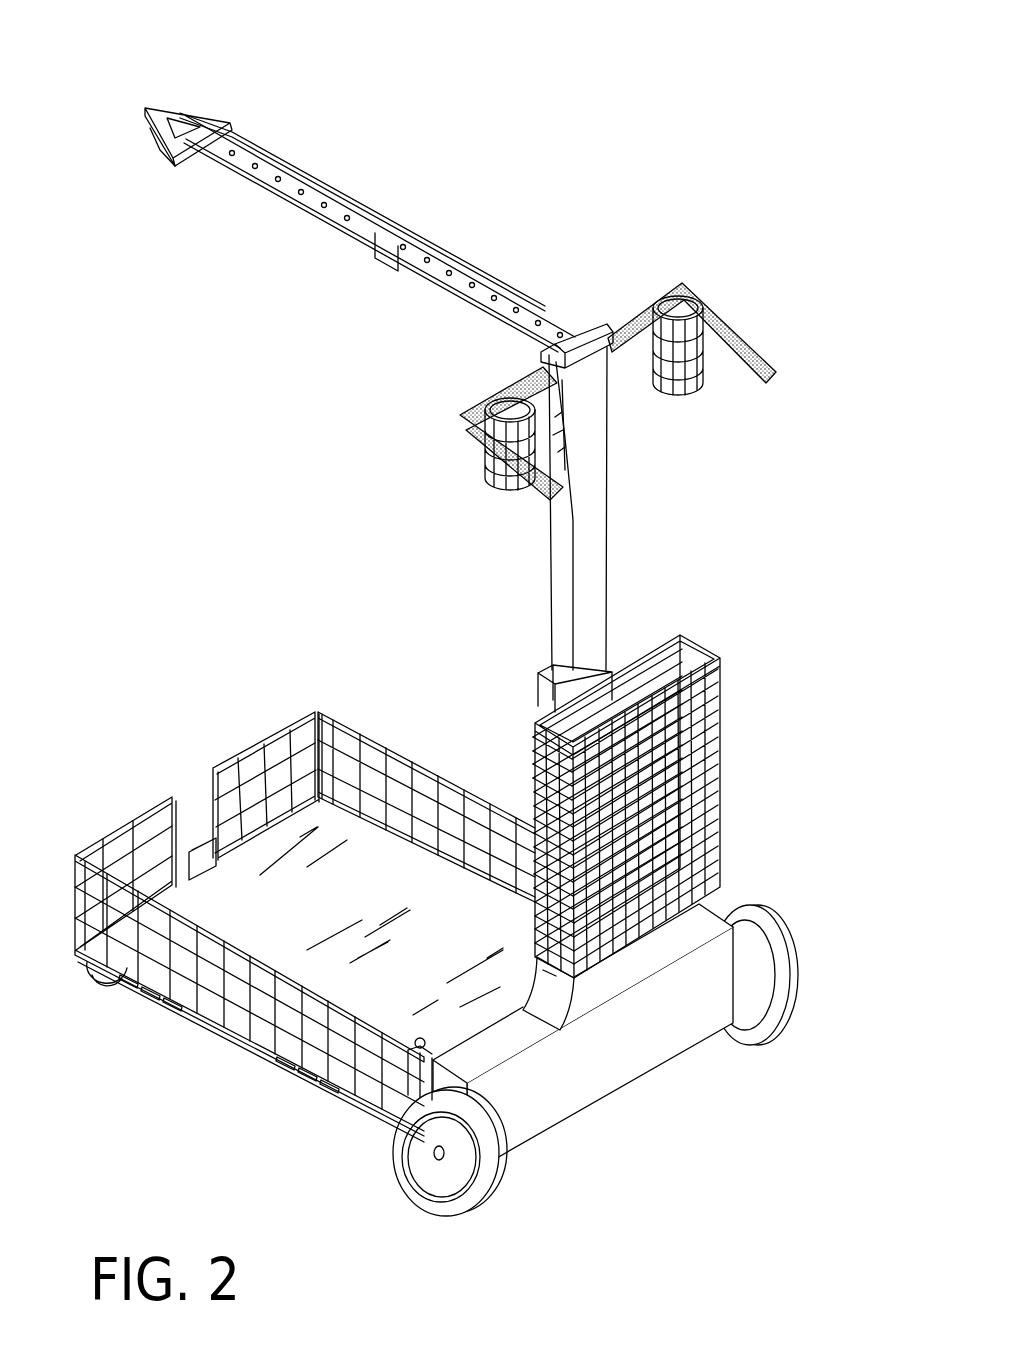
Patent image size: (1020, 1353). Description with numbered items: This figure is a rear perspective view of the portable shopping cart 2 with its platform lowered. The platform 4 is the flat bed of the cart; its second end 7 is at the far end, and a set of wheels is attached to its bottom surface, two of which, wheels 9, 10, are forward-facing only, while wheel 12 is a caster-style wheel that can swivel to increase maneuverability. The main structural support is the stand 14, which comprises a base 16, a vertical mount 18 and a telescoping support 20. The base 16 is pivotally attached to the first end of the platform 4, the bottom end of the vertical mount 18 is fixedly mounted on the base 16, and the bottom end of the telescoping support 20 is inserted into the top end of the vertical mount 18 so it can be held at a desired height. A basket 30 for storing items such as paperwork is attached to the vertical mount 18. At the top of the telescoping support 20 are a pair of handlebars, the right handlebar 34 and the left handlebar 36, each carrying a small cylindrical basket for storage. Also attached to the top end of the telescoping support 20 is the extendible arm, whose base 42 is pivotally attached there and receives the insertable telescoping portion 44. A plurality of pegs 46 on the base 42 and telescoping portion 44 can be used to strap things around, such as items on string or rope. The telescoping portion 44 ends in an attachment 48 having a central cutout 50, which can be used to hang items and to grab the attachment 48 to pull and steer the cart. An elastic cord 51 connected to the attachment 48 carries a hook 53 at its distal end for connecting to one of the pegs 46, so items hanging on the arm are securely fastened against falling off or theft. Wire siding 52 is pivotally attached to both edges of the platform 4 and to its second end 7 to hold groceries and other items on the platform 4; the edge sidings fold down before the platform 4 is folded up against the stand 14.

The portable shopping cart 2 is at (459, 641).
The platform 4 is at (280, 852).
The second end 7 is at (190, 890).
The wheel 9 is at (790, 998).
The wheel 10 is at (440, 1217).
The caster-style wheel 12 is at (112, 980).
The stand 14 is at (596, 577).
The base 16 is at (667, 1028).
The vertical mount 18 is at (550, 692).
The telescoping support 20 is at (606, 461).
The basket 30 is at (710, 738).
The right handlebar 34 is at (747, 325).
The left handlebar 36 is at (462, 428).
The base 42 is at (540, 326).
The telescoping portion 44 is at (274, 174).
The pegs 46 is at (343, 216).
The attachment 48 is at (175, 165).
The central cutout 50 is at (165, 130).
The elastic cord 51 is at (340, 192).
The wire siding 52 is at (364, 752).
The hook 53 is at (195, 122).